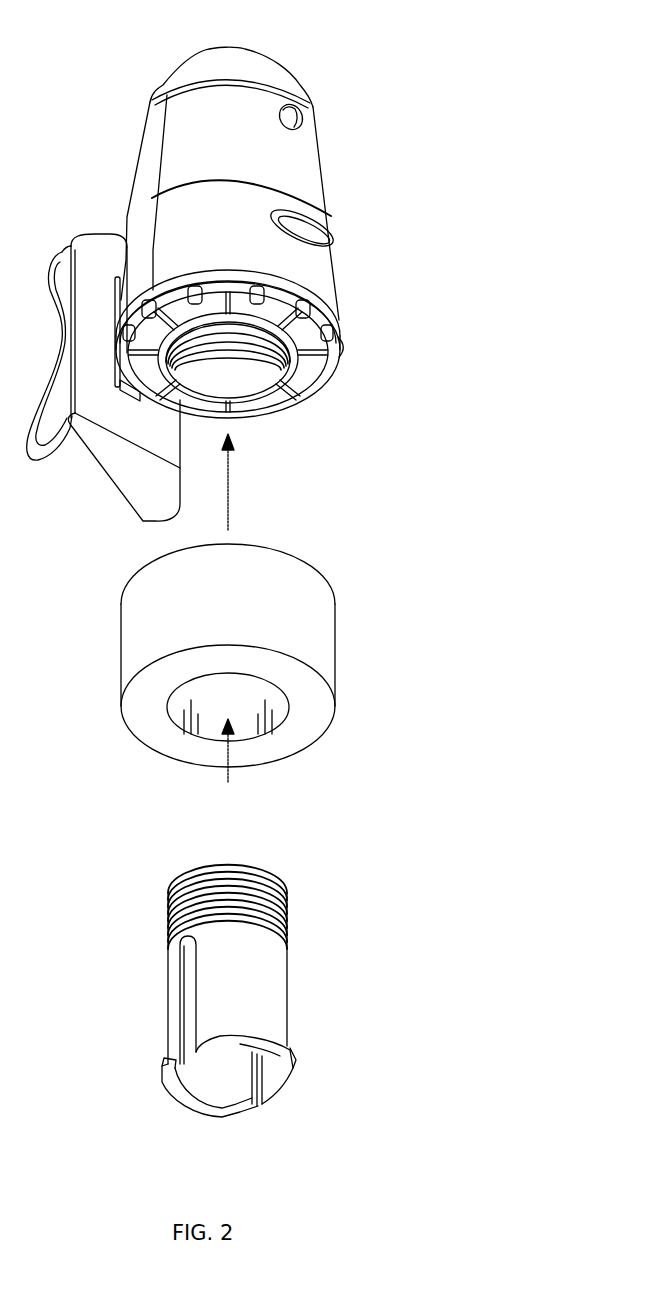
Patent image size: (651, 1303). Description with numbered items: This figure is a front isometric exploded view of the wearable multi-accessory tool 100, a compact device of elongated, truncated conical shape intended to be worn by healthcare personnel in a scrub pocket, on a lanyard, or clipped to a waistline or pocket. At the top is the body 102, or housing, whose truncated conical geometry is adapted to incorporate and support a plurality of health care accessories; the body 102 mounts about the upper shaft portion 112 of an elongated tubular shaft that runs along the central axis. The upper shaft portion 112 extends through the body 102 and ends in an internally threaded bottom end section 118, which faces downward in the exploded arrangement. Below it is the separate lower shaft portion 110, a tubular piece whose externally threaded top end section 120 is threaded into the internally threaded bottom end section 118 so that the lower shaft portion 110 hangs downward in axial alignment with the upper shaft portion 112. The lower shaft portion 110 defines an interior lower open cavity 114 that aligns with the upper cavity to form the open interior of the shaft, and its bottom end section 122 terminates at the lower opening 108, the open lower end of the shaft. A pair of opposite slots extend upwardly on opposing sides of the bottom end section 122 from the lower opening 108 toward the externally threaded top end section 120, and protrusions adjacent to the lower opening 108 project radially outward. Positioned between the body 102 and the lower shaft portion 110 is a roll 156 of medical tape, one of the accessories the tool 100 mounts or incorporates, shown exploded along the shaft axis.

The wearable multi-accessory tool 100 is at (447, 72).
The body 102 is at (338, 193).
The lower opening 108 is at (180, 1086).
The lower shaft portion 110 is at (288, 968).
The upper shaft portion 112 is at (268, 350).
The lower open cavity 114 is at (225, 1082).
The internally threaded bottom end section 118 is at (229, 368).
The externally threaded top end section 120 is at (285, 902).
The bottom end section 122 is at (289, 1043).
The roll of medical tape 156 is at (338, 648).